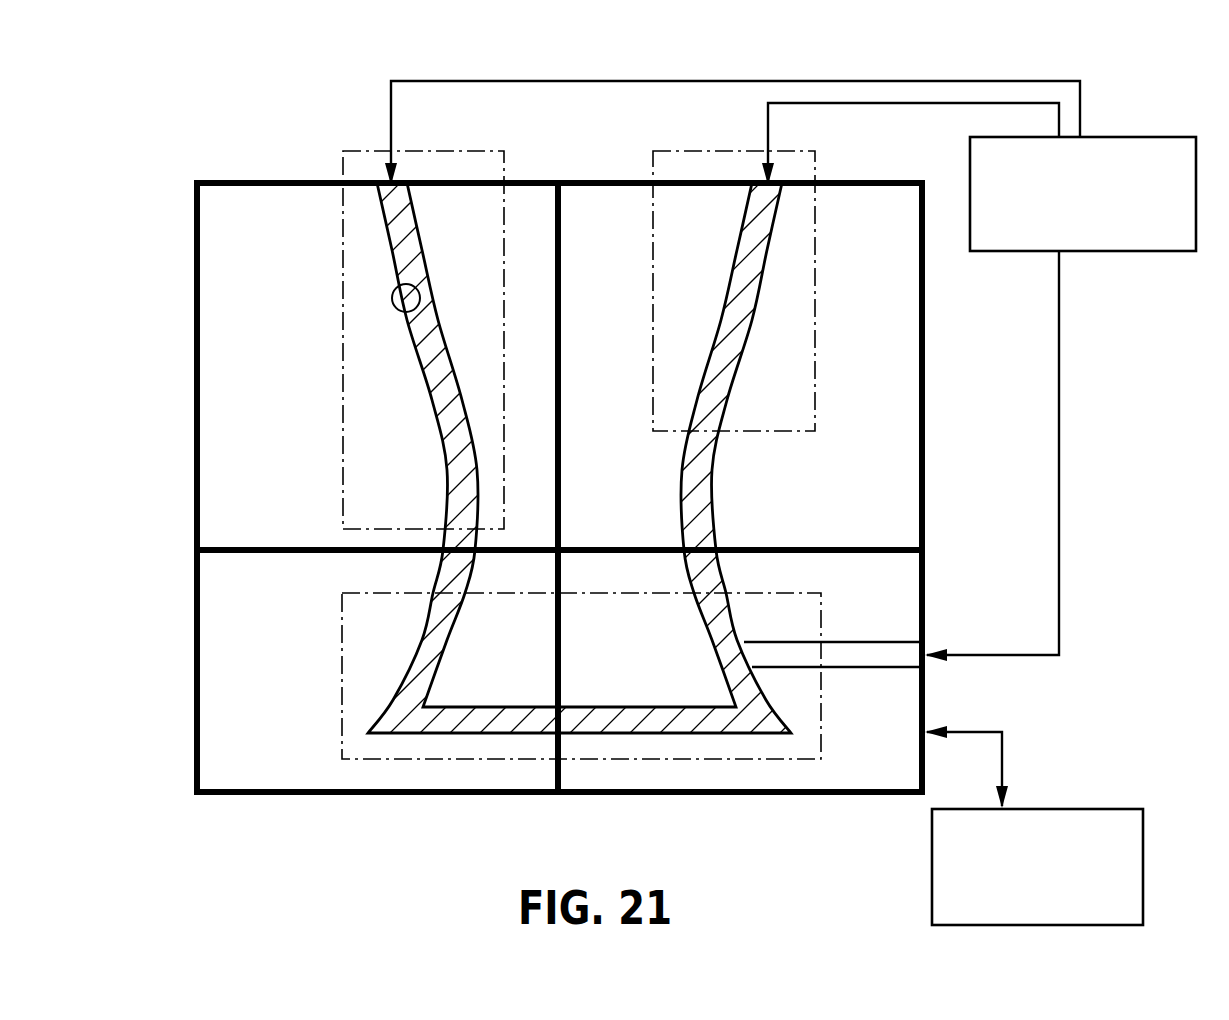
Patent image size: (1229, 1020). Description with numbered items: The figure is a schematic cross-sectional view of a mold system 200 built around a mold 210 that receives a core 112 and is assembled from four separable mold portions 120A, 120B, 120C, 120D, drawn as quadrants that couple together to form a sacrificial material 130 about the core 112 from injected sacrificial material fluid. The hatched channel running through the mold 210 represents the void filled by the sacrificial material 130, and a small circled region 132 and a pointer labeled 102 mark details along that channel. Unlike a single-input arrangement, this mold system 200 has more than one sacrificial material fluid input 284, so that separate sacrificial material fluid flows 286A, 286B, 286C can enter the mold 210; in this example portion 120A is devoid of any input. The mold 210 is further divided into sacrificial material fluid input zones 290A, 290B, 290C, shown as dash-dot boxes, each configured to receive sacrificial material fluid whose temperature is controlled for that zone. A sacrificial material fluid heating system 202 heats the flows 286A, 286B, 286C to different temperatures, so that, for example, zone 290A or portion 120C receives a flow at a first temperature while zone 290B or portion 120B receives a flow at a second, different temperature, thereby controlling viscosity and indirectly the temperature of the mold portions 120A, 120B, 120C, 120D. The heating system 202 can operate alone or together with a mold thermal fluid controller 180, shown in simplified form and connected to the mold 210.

The mold system 200 is at (267, 105).
The mold 210 is at (225, 167).
The separable mold portion 120A is at (278, 590).
The separable mold portion 120B is at (832, 590).
The separable mold portion 120C is at (278, 223).
The separable mold portion 120D is at (832, 223).
The core 112 is at (585, 184).
The sacrificial material 130 is at (447, 392).
The sacrificial material 132 is at (393, 290).
The part cavity 102 is at (428, 472).
The sacrificial material fluid input 284 is at (395, 195).
The sacrificial material fluid flow 286A is at (391, 97).
The sacrificial material fluid flow 286B is at (767, 109).
The sacrificial material fluid flow 286C is at (1060, 535).
The sacrificial material fluid input zone 290A is at (795, 431).
The sacrificial material fluid input zone 290B is at (500, 759).
The sacrificial material fluid input zone 290C is at (343, 368).
The sacrificial material fluid heating system 202 is at (1092, 243).
The mold thermal fluid controller 180 is at (1015, 913).